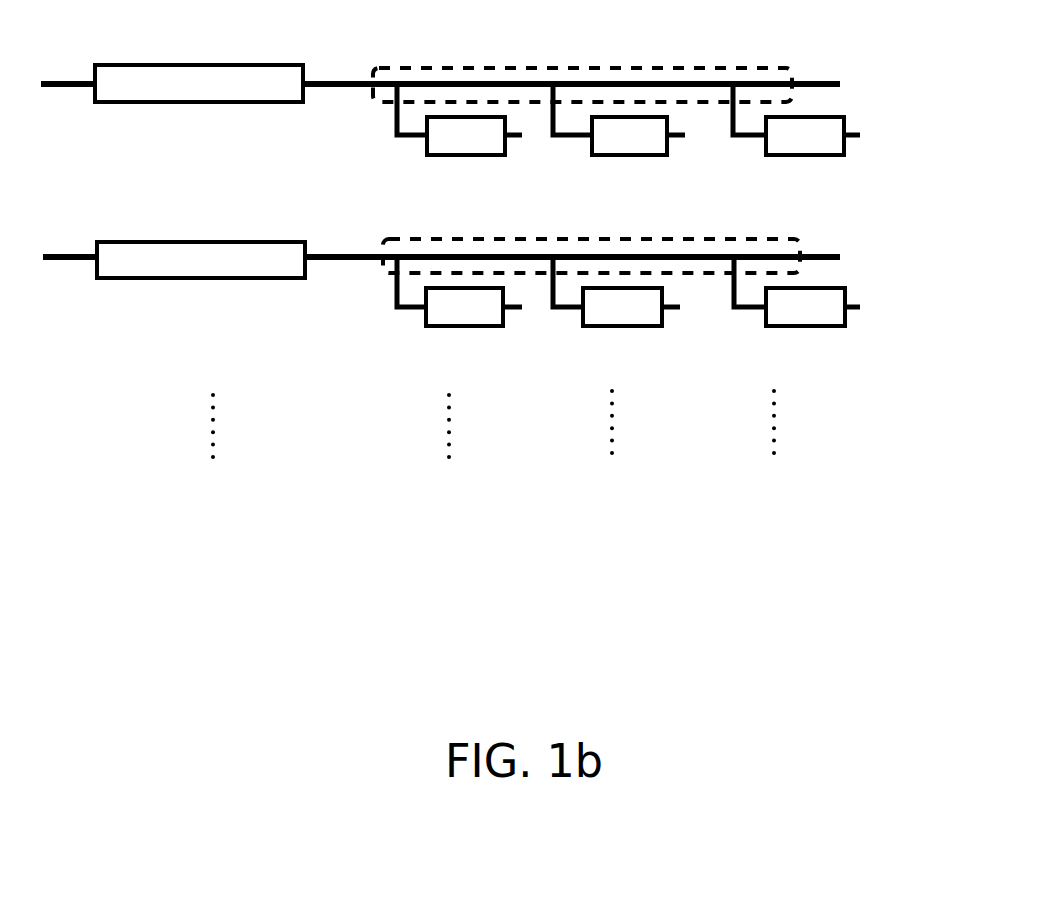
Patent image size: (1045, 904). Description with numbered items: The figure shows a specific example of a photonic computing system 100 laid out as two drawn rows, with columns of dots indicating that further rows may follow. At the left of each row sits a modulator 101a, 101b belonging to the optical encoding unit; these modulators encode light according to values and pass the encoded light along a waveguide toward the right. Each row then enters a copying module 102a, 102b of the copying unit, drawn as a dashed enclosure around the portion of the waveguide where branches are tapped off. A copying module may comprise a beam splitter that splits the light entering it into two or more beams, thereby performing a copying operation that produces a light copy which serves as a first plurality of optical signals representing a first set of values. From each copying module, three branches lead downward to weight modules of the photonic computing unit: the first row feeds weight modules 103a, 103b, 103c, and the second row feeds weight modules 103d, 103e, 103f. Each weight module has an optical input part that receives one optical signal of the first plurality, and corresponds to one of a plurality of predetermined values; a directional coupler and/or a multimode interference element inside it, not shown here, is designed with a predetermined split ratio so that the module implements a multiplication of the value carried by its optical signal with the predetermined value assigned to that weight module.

The optical system / photonic array 100 is at (488, 294).
The modulator 101a is at (216, 122).
The modulator 101b is at (204, 300).
The copying module 102a is at (772, 55).
The copying module 102b is at (812, 232).
The weight module 103a is at (443, 147).
The weight module 103b is at (606, 147).
The weight module 103c is at (782, 147).
The weight module 103d is at (441, 318).
The weight module 103e is at (599, 318).
The weight module 103f is at (783, 318).